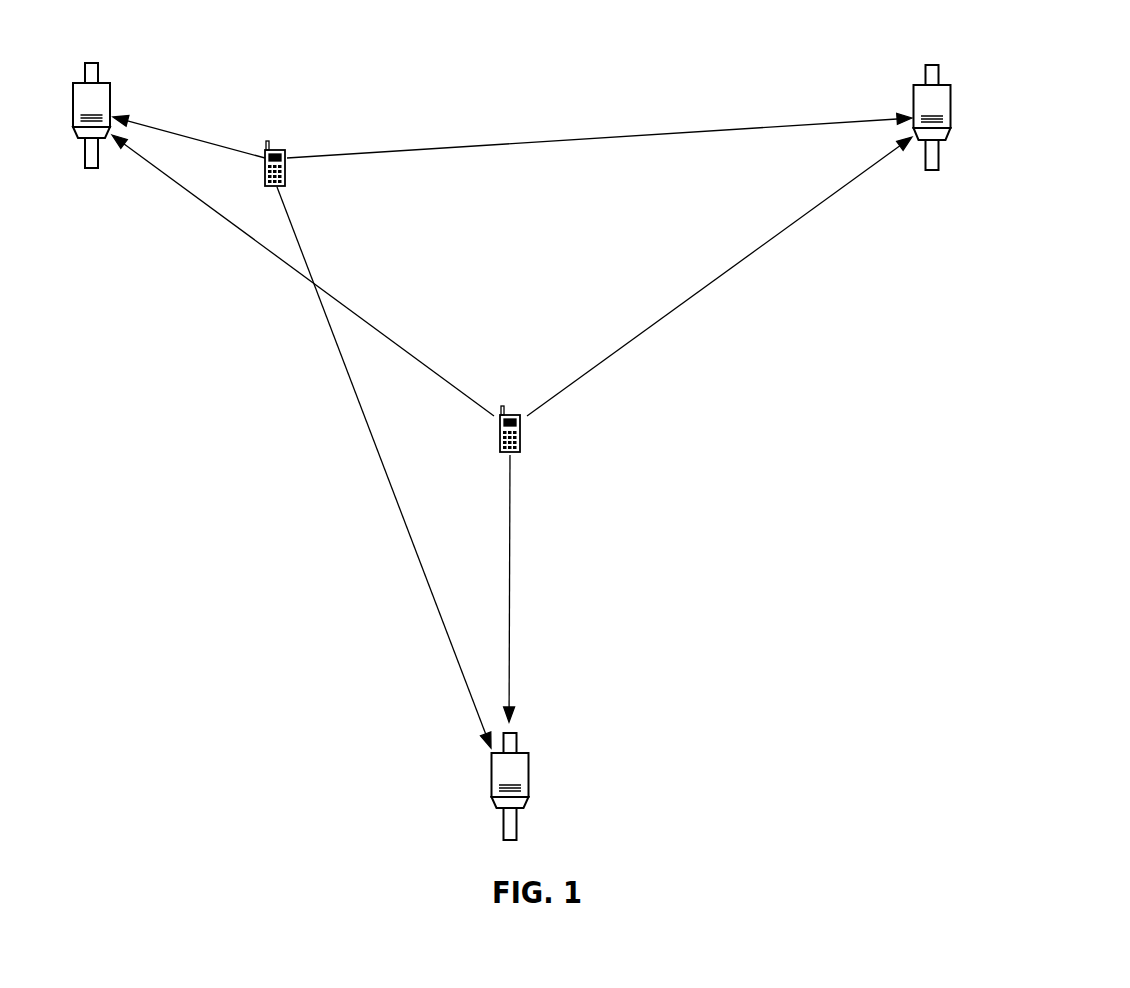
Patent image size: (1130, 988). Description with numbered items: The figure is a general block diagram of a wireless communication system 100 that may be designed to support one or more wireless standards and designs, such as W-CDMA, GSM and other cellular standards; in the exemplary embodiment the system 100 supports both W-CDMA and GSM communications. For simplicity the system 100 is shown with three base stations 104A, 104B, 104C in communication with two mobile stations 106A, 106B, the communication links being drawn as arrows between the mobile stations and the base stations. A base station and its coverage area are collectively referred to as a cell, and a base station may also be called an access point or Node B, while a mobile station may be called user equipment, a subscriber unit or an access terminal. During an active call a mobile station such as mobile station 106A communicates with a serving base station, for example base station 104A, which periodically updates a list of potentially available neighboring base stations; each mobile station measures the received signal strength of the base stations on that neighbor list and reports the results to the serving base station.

The wireless communication system 100 is at (1072, 293).
The base station 104A is at (98, 83).
The base station 104B is at (943, 85).
The base station 104C is at (520, 753).
The mobile station 106A is at (280, 150).
The mobile station 106B is at (505, 452).